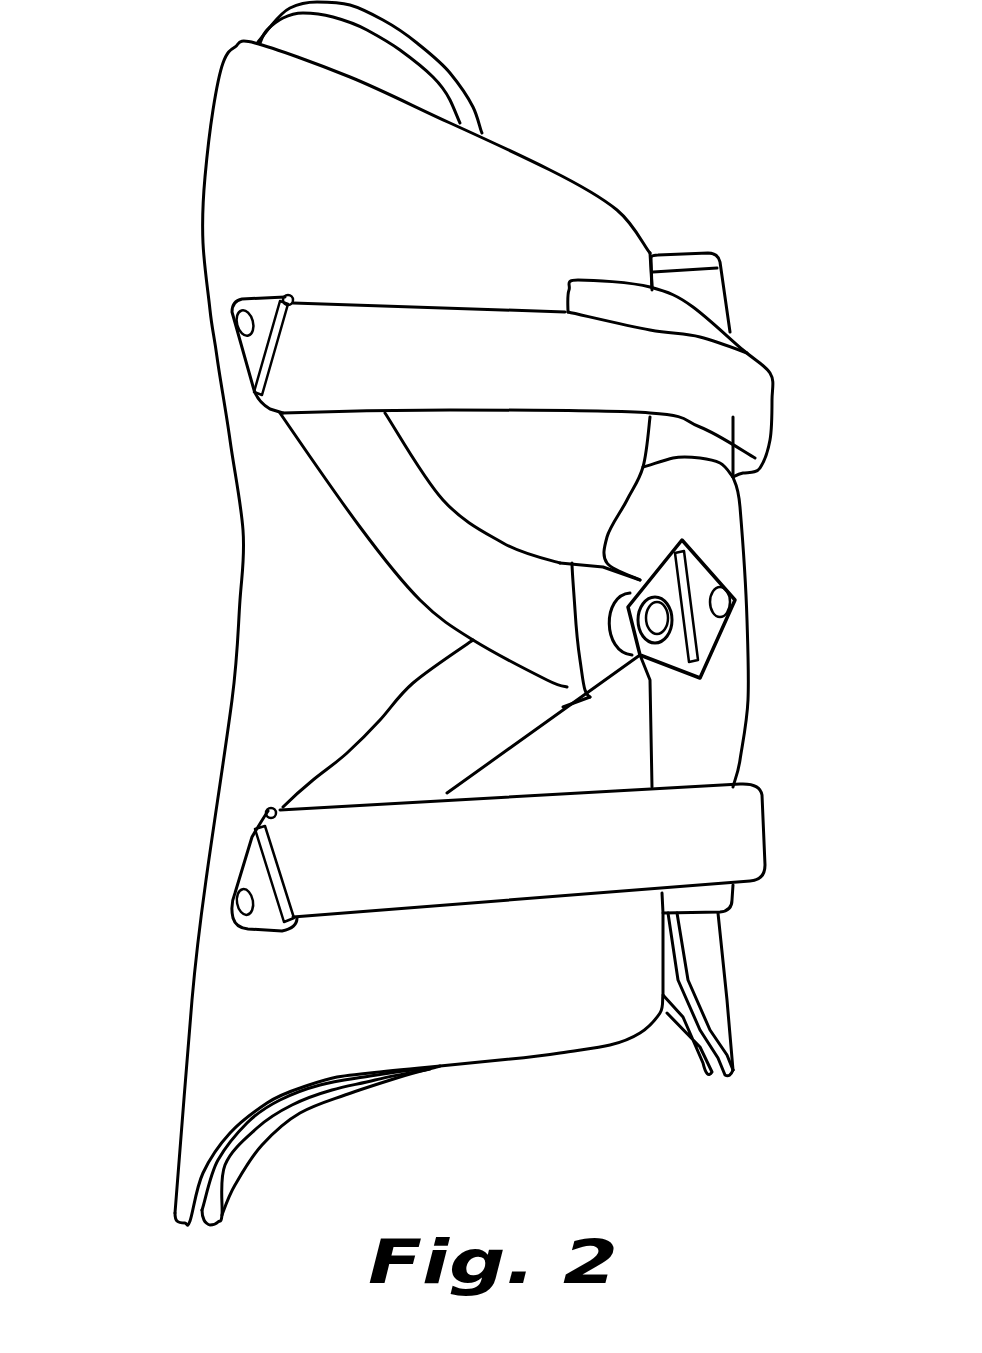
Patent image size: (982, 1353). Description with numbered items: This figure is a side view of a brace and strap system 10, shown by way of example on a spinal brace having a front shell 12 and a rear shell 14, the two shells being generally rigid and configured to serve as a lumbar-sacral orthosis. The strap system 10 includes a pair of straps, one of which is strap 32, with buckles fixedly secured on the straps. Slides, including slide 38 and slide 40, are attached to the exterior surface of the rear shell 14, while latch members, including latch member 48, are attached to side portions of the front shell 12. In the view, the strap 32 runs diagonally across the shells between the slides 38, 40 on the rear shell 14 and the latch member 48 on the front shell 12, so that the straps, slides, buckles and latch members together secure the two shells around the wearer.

The strap system 10 is at (312, 619).
The front shell 12 is at (720, 290).
The rear shell 14 is at (263, 198).
The strap 32 is at (395, 512).
The slide 38 is at (230, 875).
The slide 40 is at (250, 350).
The latch member 48 is at (710, 580).